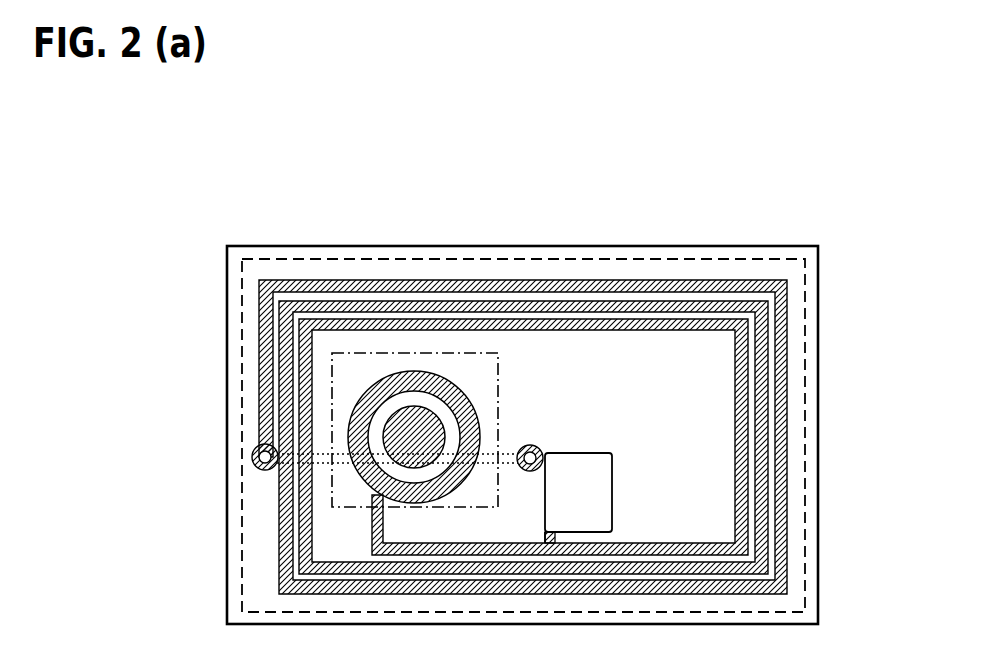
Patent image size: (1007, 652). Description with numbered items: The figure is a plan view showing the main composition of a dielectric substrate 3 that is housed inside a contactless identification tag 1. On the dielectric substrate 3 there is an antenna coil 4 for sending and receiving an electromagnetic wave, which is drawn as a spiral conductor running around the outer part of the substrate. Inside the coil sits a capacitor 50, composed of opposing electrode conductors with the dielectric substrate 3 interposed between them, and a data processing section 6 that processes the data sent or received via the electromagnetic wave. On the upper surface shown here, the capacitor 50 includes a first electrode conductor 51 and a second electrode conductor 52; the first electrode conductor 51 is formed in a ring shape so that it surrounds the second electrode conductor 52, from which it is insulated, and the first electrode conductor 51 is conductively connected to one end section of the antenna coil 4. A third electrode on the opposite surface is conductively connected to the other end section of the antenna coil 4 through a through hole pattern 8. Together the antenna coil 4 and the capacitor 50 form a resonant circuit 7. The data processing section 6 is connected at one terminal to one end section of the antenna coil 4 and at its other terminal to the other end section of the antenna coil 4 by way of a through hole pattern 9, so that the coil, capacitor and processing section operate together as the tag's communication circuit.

The contactless identification tag 1 is at (706, 211).
The dielectric substrate 3 is at (818, 302).
The antenna coil 4 is at (785, 403).
The data processing section 6 is at (600, 492).
The resonant circuit 7 is at (807, 495).
The through hole pattern 8 is at (253, 456).
The through hole pattern 9 is at (536, 446).
The capacitor 50 is at (500, 407).
The first electrode conductor 51 is at (462, 486).
The second electrode conductor 52 is at (430, 408).